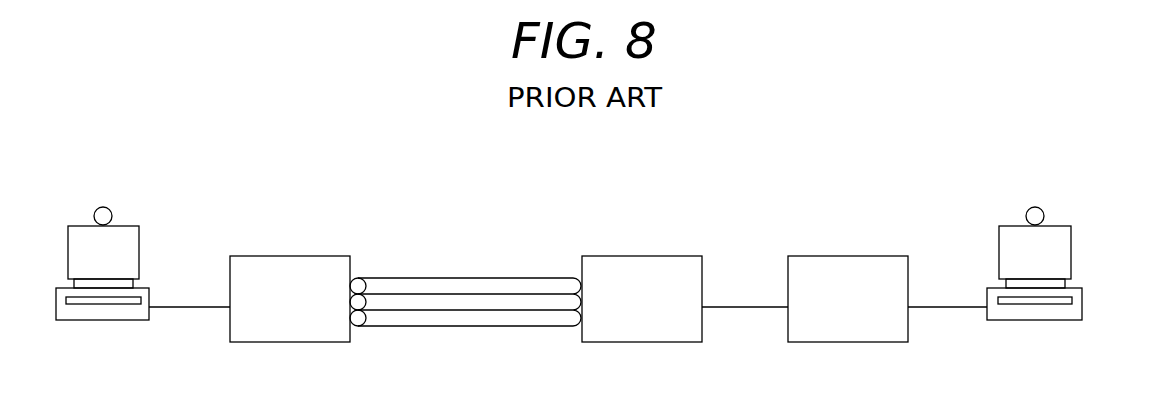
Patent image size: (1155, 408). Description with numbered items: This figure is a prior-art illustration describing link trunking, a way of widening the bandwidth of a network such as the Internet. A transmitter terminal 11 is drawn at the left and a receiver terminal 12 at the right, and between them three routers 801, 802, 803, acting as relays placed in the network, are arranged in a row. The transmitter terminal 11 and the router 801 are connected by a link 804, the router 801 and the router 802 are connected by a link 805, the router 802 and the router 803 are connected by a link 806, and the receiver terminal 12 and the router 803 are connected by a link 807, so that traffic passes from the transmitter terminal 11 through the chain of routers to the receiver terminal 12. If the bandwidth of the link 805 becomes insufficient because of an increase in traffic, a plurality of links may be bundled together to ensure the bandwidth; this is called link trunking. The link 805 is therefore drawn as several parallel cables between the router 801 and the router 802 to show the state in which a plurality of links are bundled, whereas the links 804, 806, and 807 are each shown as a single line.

The transmitter terminal 11 is at (132, 223).
The receiver terminal 12 is at (1058, 223).
The router 801 is at (275, 255).
The router 802 is at (618, 255).
The router 803 is at (828, 255).
The link 804 is at (163, 306).
The link 805 is at (440, 277).
The link 806 is at (720, 306).
The link 807 is at (925, 306).